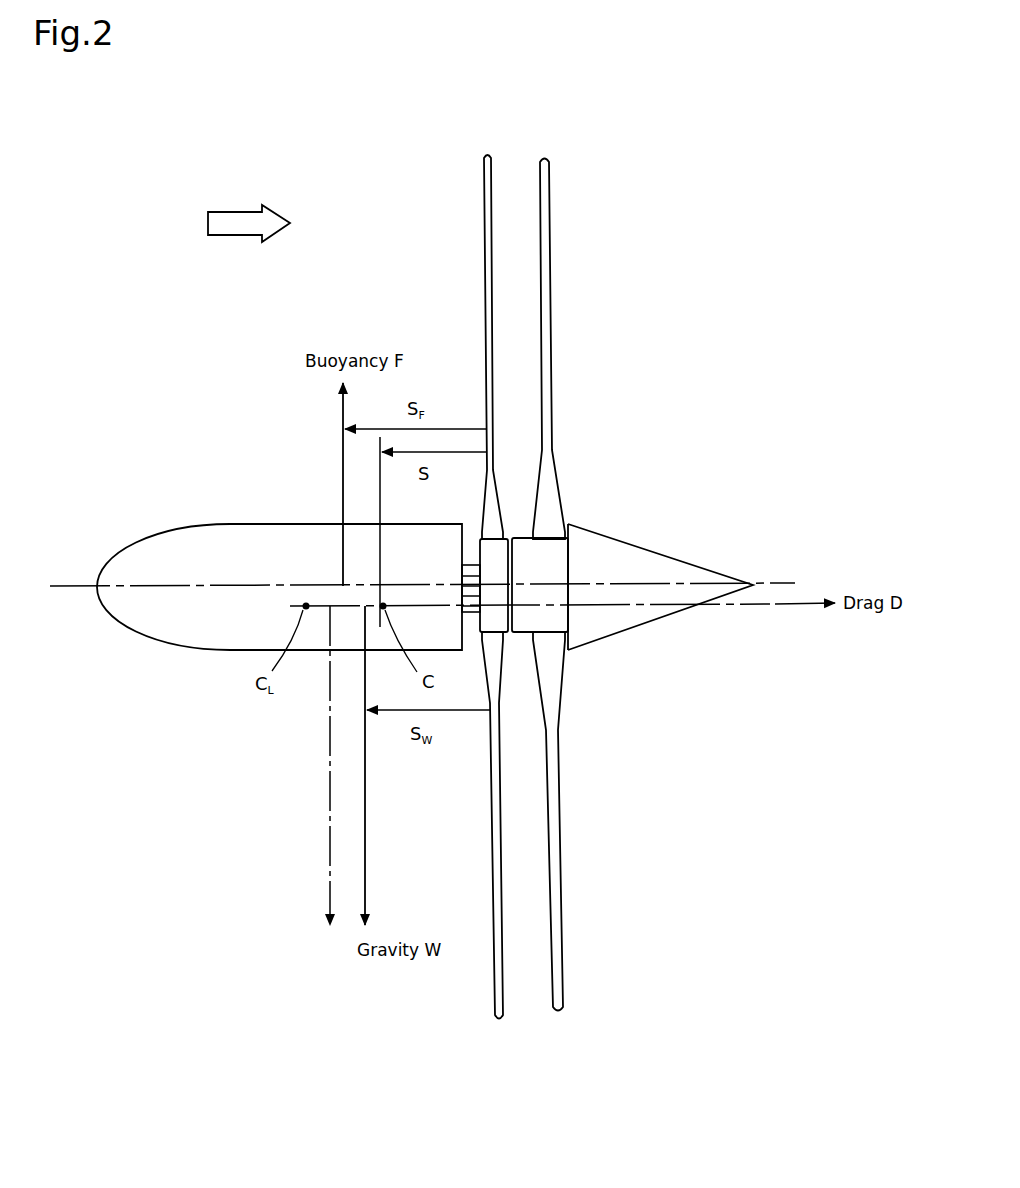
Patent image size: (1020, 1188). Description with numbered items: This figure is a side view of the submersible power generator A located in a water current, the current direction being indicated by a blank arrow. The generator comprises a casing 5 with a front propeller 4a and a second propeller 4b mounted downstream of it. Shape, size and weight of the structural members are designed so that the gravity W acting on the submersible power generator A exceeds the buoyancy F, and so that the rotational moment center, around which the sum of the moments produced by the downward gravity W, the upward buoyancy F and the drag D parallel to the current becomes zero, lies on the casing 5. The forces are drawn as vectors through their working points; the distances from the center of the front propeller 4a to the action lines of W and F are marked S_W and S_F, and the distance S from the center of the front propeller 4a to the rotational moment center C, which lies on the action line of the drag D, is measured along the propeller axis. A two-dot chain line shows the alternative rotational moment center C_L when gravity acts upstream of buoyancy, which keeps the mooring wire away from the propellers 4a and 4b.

The front propeller 4a is at (483, 200).
The propeller 4b is at (549, 196).
The casing 5 is at (152, 538).
The submersible power generator A is at (678, 505).